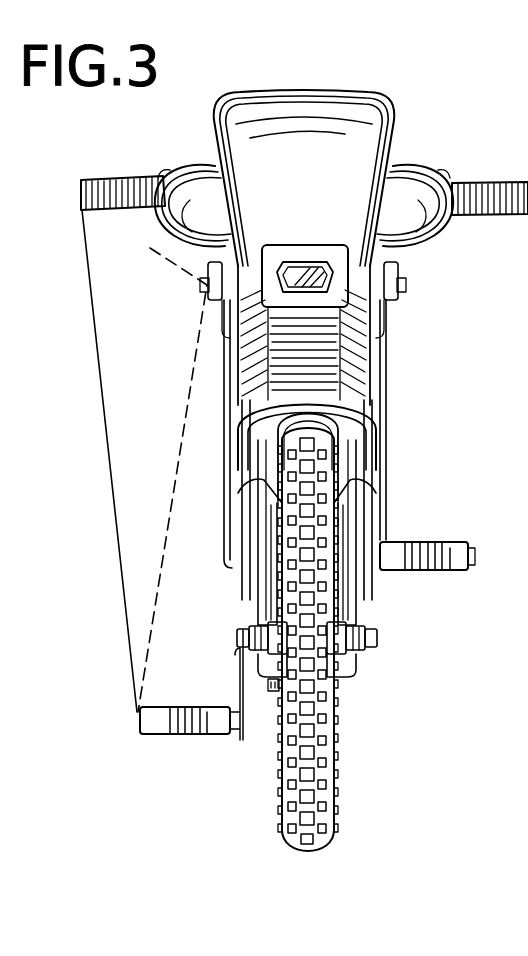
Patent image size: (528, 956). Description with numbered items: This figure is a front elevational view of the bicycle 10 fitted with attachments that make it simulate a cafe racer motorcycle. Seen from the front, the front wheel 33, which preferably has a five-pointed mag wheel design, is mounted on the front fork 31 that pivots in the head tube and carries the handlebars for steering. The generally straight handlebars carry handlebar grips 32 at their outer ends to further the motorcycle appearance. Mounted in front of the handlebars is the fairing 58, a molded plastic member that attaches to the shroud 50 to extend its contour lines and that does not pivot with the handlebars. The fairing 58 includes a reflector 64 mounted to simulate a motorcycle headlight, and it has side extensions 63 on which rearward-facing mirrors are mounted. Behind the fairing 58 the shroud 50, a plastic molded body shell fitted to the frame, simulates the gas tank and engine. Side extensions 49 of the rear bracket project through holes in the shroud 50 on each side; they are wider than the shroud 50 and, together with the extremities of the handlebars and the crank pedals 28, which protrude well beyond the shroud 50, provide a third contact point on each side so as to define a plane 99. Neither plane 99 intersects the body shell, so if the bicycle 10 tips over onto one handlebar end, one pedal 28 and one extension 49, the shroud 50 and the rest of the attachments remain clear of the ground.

The bicycle 10 is at (398, 583).
The crank pedals 28 is at (181, 723).
The front fork 31 is at (250, 565).
The handlebar grips 32 is at (490, 184).
The front wheel 33 is at (324, 812).
The side extensions 49 is at (206, 287).
The shroud 50 is at (371, 352).
The fairing 58 is at (331, 138).
The side extensions of the fairing 63 is at (192, 213).
The reflector 64 is at (303, 276).
The plane 99 is at (132, 372).